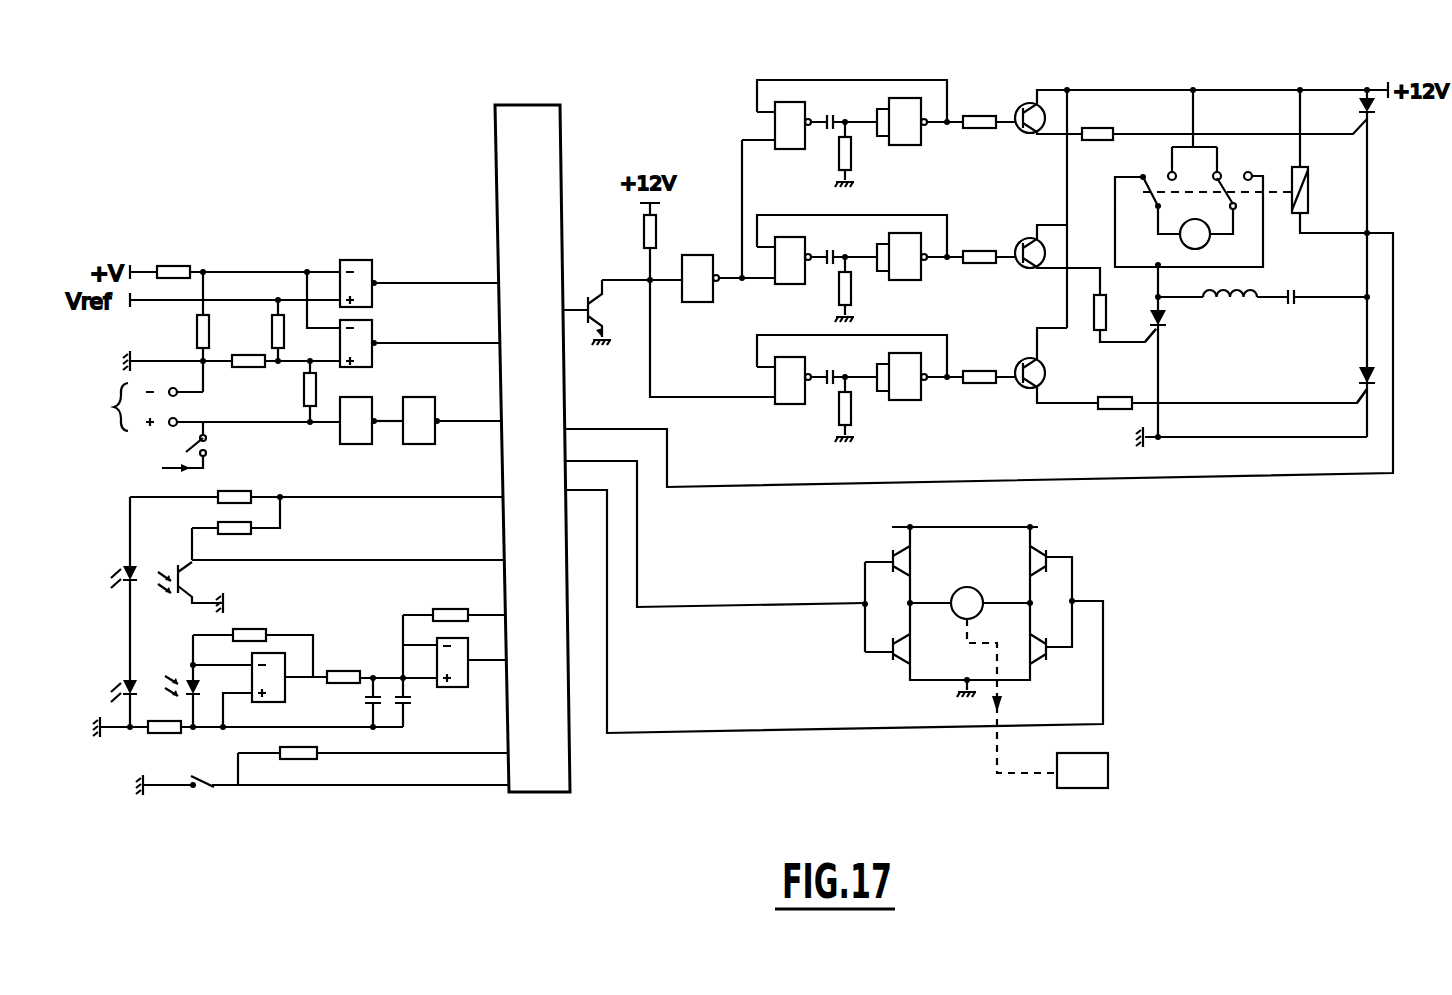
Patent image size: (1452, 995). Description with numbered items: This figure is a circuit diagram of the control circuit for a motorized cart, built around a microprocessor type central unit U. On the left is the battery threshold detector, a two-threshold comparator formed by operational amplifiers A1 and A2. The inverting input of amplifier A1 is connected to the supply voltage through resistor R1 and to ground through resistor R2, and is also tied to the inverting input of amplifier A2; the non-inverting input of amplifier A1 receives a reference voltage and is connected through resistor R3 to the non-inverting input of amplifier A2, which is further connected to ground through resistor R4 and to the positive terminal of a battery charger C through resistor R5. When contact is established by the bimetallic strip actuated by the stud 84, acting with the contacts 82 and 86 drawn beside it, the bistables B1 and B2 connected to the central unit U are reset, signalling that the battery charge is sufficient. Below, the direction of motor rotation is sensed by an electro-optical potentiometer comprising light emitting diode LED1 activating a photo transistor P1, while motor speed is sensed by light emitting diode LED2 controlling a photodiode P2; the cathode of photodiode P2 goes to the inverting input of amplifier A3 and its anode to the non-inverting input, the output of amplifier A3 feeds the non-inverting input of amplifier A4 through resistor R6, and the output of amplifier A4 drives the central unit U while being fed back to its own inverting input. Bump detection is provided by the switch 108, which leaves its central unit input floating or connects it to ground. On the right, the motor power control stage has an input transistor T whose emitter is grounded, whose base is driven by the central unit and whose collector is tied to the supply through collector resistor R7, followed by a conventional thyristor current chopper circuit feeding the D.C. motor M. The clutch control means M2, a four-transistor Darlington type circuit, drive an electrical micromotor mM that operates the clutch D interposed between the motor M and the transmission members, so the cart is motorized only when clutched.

The resistor R1 is at (173, 267).
The resistor R2 is at (197, 333).
The resistor R3 is at (272, 333).
The resistor R4 is at (249, 368).
The resistor R5 is at (304, 394).
The resistor R6 is at (345, 671).
The collector resistor R7 is at (644, 233).
The operational amplifier A1 is at (370, 260).
The operational amplifier A2 is at (375, 326).
The operational amplifier A3 is at (286, 697).
The operational amplifier A4 is at (452, 688).
The bistable B1 is at (360, 446).
The bistable B2 is at (424, 446).
The battery charger C is at (137, 407).
The switch contact 82 is at (207, 452).
The stud 84 is at (185, 450).
The switch contact 86 is at (187, 472).
The switch 108 is at (205, 797).
The light emitting diode LED1 is at (122, 574).
The light emitting diode LED2 is at (110, 688).
The photo transistor P1 is at (177, 560).
The photodiode P2 is at (176, 672).
The central unit U is at (546, 127).
The input transistor T is at (589, 298).
The motor M is at (1208, 242).
The clutch control means M2 is at (1007, 603).
The electrical micromotor mM is at (960, 592).
The clutch D is at (1108, 774).